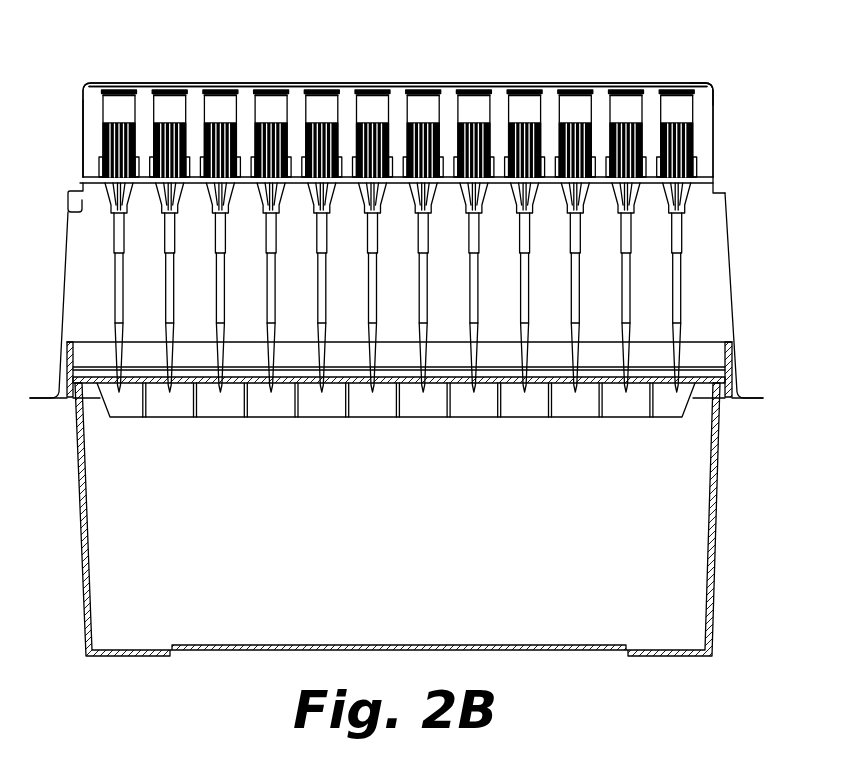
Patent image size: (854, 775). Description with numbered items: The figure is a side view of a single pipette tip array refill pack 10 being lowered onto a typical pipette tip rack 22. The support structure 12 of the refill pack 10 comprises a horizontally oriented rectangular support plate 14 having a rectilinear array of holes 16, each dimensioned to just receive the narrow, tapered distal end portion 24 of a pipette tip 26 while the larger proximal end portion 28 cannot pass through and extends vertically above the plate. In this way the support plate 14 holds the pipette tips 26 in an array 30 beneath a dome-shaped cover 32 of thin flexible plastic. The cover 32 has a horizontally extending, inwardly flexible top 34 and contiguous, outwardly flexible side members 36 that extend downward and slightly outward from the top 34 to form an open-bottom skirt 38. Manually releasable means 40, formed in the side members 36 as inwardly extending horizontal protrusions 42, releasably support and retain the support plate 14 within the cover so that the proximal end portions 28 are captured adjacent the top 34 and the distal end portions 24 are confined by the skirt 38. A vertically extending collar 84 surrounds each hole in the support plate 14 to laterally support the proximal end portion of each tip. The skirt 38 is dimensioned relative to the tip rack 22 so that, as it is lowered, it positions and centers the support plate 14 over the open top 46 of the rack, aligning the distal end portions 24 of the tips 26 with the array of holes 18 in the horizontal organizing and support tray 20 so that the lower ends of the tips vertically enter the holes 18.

The single pipette tip array refill pack 10 is at (780, 205).
The support structure 12 is at (718, 177).
The support plate 14 is at (84, 167).
The holes 16 is at (105, 192).
The holes 18 is at (280, 384).
The organizing and support tray 20 is at (90, 381).
The pipette tip rack 22 is at (735, 470).
The distal end portion 24 is at (117, 296).
The pipette tip 26 is at (478, 87).
The proximal end portion 28 is at (113, 96).
The array 30 is at (306, 77).
The cover 32 is at (716, 92).
The top 34 is at (400, 83).
The side members 36 is at (63, 313).
The skirt 38 is at (57, 400).
The manually releasable means 40 is at (727, 192).
The protrusions 42 is at (69, 194).
The open top 46 is at (716, 352).
The collar 84 is at (698, 157).